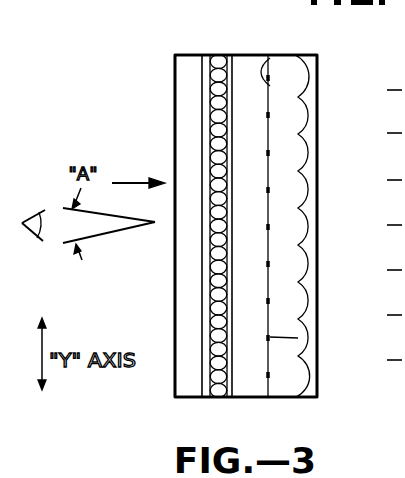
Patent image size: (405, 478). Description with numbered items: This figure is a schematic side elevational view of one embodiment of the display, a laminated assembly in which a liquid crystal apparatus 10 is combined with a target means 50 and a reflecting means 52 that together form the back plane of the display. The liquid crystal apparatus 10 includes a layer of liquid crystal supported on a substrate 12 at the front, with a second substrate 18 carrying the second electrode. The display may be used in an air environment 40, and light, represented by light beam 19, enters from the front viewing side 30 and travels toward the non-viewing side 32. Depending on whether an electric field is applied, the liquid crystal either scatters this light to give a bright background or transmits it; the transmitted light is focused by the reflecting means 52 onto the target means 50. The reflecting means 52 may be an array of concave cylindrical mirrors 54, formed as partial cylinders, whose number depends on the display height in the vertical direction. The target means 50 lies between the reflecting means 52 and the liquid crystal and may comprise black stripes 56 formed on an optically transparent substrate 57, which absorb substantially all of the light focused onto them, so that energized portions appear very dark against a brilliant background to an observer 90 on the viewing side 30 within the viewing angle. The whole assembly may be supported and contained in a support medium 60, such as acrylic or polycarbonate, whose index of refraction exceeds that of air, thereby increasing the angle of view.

The liquid crystal apparatus 10 is at (219, 56).
The substrate 12 is at (206, 56).
The substrate 18 is at (229, 57).
The light beam 19 is at (138, 183).
The viewing side 30 is at (210, 405).
The non-viewing side 32 is at (311, 243).
The air environment 40 is at (208, 73).
The target means 50 is at (272, 58).
The reflecting means 52 is at (310, 80).
The cylindrical mirrors 54 is at (310, 111).
The black stripes 56 is at (298, 338).
The optically transparent substrate 57 is at (270, 65).
The support medium 60 is at (187, 384).
The observer 90 is at (37, 210).